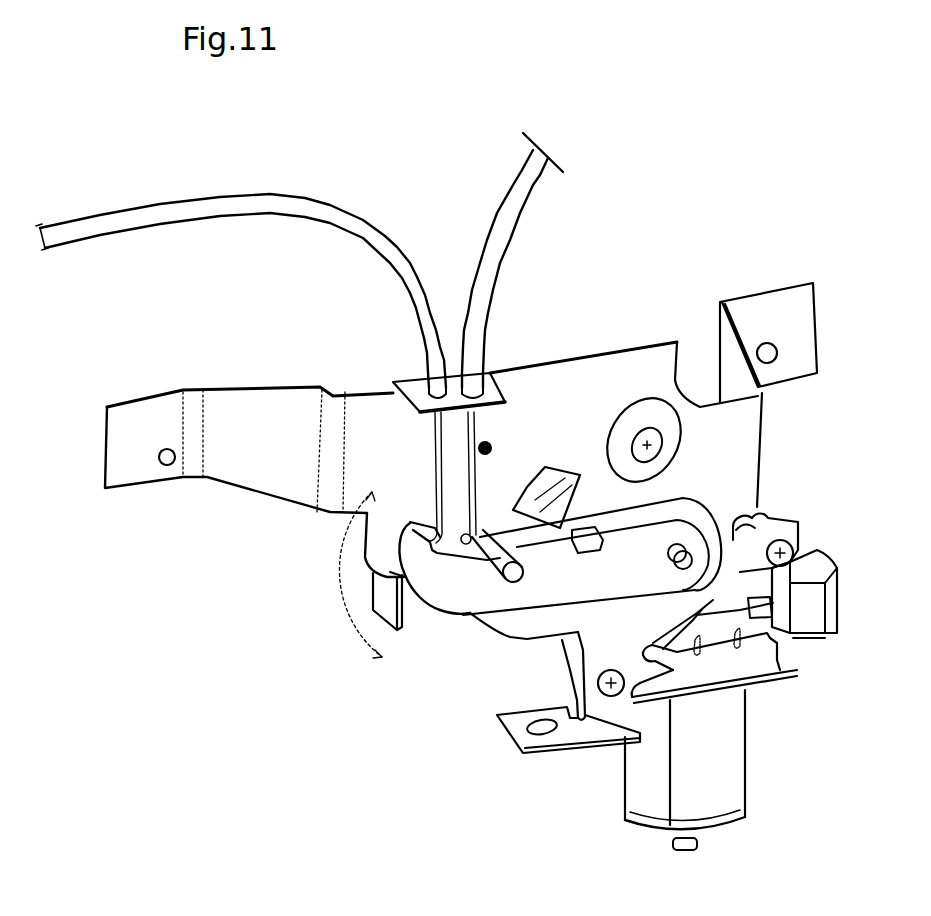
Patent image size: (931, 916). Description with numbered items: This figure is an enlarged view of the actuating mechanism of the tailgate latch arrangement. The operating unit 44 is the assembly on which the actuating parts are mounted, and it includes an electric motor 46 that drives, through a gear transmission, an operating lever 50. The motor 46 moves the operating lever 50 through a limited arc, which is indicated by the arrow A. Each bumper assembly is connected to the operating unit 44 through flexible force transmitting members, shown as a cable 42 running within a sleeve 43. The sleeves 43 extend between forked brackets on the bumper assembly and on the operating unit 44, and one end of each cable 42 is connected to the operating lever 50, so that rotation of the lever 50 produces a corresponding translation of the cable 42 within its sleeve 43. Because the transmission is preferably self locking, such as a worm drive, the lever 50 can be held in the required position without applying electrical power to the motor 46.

The sleeve 43 is at (300, 200).
The operating unit 44 is at (633, 328).
The electric motor 46 is at (410, 387).
The cable 42 is at (432, 468).
The operating lever 50 is at (447, 597).
The arrow A is at (342, 590).